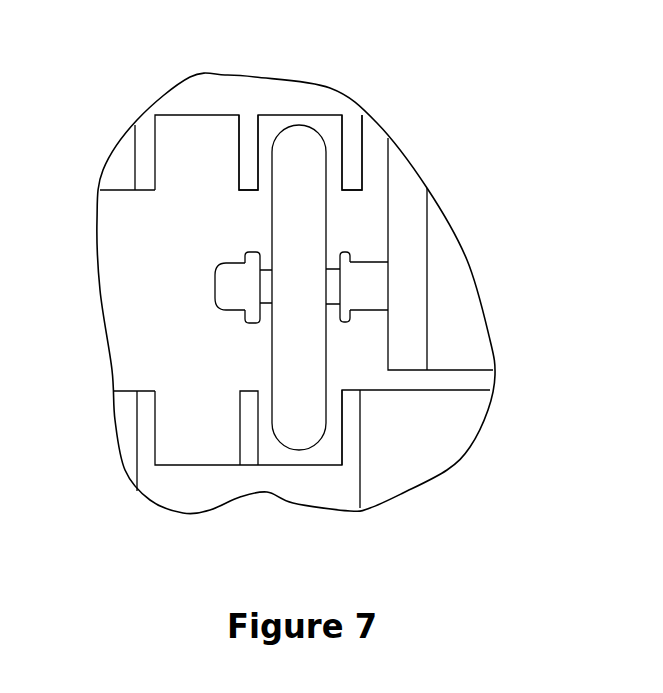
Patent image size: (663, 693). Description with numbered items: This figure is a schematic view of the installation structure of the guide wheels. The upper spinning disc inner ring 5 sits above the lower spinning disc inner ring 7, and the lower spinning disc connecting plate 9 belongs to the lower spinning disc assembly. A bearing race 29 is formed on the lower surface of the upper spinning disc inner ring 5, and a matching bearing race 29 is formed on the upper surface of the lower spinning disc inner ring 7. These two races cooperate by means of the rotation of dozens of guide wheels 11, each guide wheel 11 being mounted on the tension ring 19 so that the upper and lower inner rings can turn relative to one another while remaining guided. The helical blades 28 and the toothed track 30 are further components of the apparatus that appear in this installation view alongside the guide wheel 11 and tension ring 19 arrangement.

The upper spinning disc inner ring 5 is at (260, 75).
The lower spinning disc inner ring 7 is at (327, 492).
The lower spinning disc connecting plate 9 is at (430, 442).
The guide wheel 11 is at (310, 378).
The tension ring 19 is at (408, 222).
The helical blades 28 is at (120, 168).
The bearing race 29 is at (334, 135).
The toothed track 30 is at (197, 145).